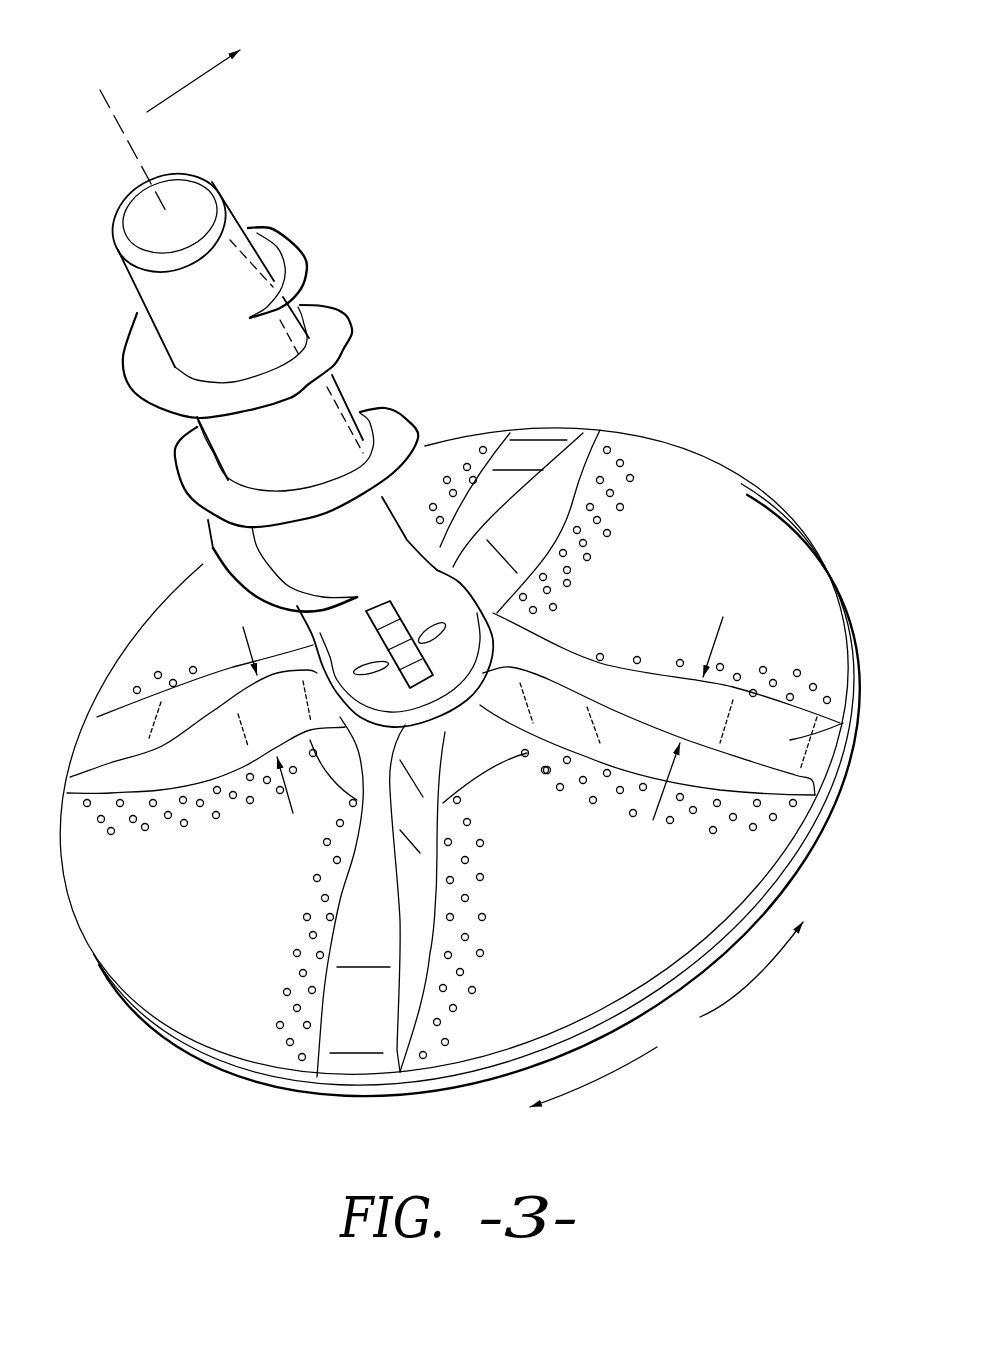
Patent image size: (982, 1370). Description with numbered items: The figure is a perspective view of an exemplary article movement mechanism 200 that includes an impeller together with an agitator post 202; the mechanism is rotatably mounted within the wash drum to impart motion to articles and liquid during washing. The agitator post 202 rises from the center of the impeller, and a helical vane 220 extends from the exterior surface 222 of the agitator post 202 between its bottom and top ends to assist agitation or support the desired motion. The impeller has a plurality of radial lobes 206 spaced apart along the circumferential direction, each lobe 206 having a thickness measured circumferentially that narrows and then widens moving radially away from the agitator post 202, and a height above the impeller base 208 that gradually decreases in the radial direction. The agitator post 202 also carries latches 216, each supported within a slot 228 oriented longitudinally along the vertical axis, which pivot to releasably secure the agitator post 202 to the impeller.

The article movement mechanism 200 is at (475, 187).
The agitator post 202 is at (233, 231).
The radial lobes 206 is at (540, 447).
The impeller base 208 is at (760, 523).
The latches 216 is at (417, 626).
The helical vane 220 is at (327, 323).
The exterior surface 222 is at (128, 297).
The slot 228 is at (382, 593).